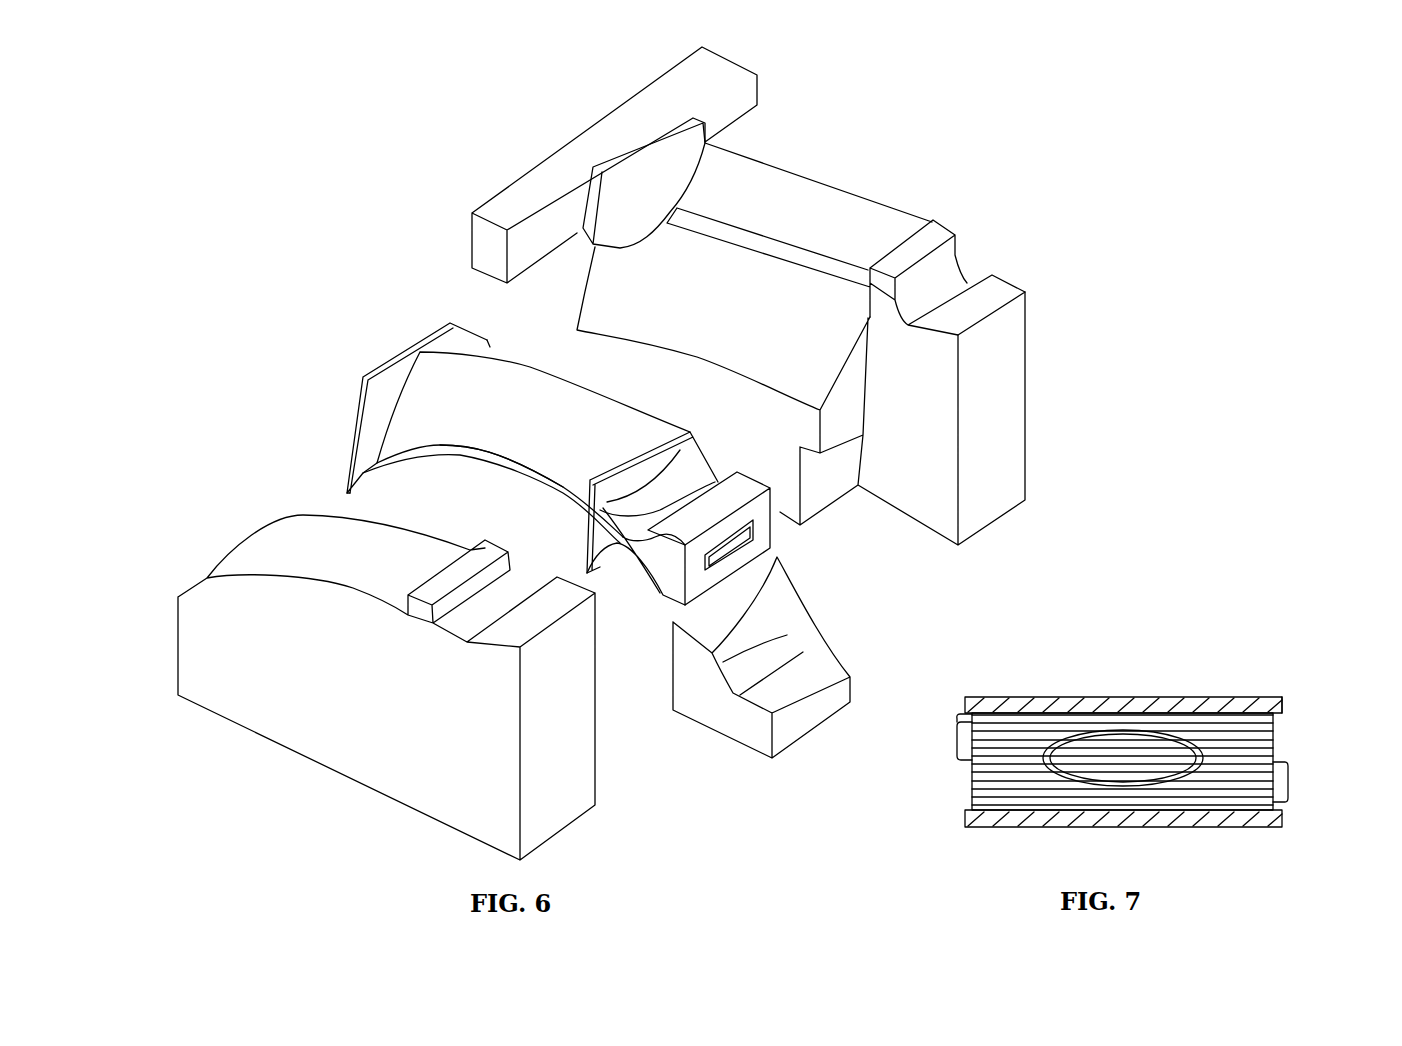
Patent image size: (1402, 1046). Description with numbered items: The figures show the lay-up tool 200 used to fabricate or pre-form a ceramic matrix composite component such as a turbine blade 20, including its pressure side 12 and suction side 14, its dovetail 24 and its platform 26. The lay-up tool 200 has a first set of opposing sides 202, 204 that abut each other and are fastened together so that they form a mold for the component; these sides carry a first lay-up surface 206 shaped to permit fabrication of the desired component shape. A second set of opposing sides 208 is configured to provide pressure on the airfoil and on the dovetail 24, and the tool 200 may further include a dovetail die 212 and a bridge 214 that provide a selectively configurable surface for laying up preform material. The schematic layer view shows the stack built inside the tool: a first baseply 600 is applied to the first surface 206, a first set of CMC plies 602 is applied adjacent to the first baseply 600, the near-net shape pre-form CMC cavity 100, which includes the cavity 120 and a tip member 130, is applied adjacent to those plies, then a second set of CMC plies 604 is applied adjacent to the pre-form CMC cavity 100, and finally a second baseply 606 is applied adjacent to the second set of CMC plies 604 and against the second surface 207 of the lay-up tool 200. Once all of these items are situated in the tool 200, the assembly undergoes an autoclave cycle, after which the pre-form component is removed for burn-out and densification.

In FIG. 6, the pressure side 12 is at (500, 420).
In FIG. 6, the suction side 14 is at (483, 473).
In FIG. 6, the turbine blade 20 is at (423, 410).
In FIG. 6, the dovetail 24 is at (670, 582).
In FIG. 6, the platform 26 is at (647, 443).
In FIG. 7, the pre-form CMC cavity 100 is at (1180, 737).
In FIG. 6, the cavity 120 is at (750, 532).
In FIG. 7, the cavity 120 is at (1097, 753).
In FIG. 6, the tip member 130 is at (345, 445).
In FIG. 6, the lay-up tool 200 is at (305, 222).
In FIG. 7, the lay-up tool 200 is at (1138, 694).
In FIG. 6, the first opposing side 202 is at (386, 687).
In FIG. 6, the first opposing side 204 is at (846, 239).
In FIG. 6, the first lay-up surface 206 is at (801, 396).
In FIG. 7, the first lay-up surface 206 is at (1282, 803).
In FIG. 7, the second surface 207 is at (960, 717).
In FIG. 6, the second set of opposing sides 208 is at (706, 147).
In FIG. 6, the dovetail die 212 is at (732, 740).
In FIG. 6, the bridge 214 is at (614, 165).
In FIG. 7, the first baseply 600 is at (1085, 783).
In FIG. 7, the first set of CMC plies 602 is at (1290, 782).
In FIG. 7, the second set of CMC plies 604 is at (957, 735).
In FIG. 7, the second baseply 606 is at (1282, 715).